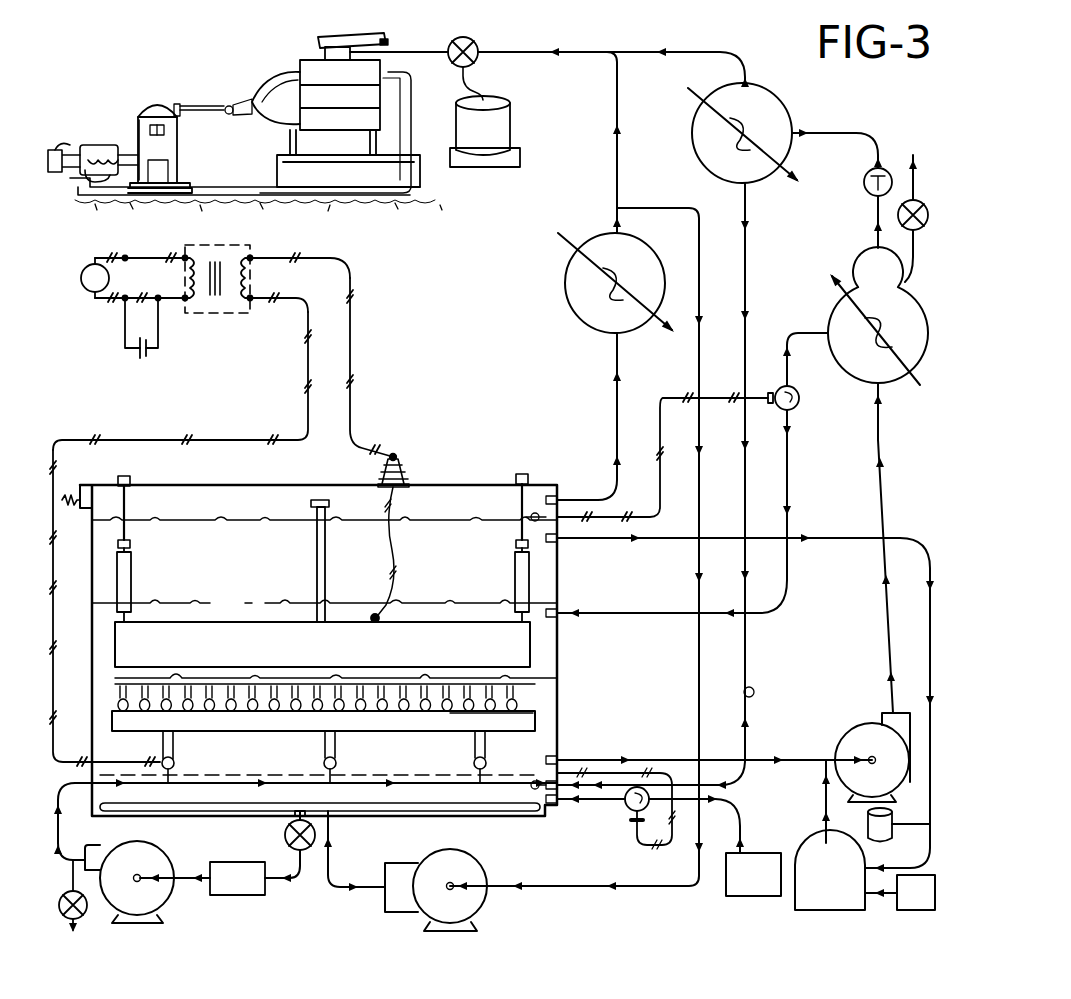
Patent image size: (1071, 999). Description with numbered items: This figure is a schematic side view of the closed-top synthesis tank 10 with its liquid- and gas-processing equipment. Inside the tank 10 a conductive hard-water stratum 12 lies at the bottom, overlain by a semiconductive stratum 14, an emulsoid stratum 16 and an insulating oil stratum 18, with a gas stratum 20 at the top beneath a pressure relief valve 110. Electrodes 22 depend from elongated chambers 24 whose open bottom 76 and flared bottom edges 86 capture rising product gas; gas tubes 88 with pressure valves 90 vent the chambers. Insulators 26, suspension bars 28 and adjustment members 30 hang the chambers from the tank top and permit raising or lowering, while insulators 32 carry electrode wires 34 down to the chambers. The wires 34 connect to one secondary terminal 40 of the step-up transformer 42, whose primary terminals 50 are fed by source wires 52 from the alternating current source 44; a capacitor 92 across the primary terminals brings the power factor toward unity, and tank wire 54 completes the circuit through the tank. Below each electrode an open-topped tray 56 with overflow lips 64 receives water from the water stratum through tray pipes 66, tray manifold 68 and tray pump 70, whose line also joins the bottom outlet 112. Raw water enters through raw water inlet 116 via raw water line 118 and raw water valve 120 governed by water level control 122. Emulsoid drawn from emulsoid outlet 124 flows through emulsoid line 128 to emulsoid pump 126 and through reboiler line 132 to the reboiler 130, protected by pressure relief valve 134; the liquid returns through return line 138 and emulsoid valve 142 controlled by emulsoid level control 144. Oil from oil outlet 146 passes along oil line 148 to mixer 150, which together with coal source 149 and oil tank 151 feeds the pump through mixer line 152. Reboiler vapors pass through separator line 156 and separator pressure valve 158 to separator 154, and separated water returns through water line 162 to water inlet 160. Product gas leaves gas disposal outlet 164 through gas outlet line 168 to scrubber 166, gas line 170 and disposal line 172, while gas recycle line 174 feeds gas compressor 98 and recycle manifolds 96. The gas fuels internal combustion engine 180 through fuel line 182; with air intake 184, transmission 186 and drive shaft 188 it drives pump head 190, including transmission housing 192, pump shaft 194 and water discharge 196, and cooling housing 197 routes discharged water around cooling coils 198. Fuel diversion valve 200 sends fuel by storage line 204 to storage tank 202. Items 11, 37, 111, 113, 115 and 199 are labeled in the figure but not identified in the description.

The tank 10 is at (268, 486).
The drain valve 11 is at (85, 908).
The water stratum 12 is at (96, 800).
The semiconductive stratum 14 is at (92, 756).
The emulsoid stratum 16 is at (96, 648).
The oil stratum 18 is at (94, 590).
The gas stratum 20 is at (108, 520).
The electrodes 22 is at (262, 712).
The elongated chambers 24 is at (214, 636).
The insulators 26 is at (132, 592).
The suspension bars 28 is at (131, 546).
The adjustment members 30 is at (136, 502).
The insulators 32 is at (132, 480).
The electrode wires 34 is at (348, 388).
The insulator 37 is at (516, 476).
The secondary terminals 40 is at (262, 284).
The transformer 42 is at (210, 308).
The source of alternating electrical current 44 is at (93, 292).
The primary terminals 50 is at (182, 282).
The source wires 52 is at (140, 260).
The tank wire 54 is at (306, 420).
The open topped tray 56 is at (382, 756).
The overflow lips 64 is at (250, 730).
The tray pipes 66 is at (162, 760).
The tray manifold 68 is at (216, 780).
The tray pump 70 is at (164, 906).
The open bottom 76 is at (396, 710).
The bottom edges 86 is at (236, 708).
The gas tubes 88 is at (316, 576).
The pressure valves 90 is at (312, 506).
The capacitor 92 is at (140, 360).
The recycle manifolds 96 is at (442, 808).
The recycle pump 98 is at (452, 866).
The pressure relief valve 110 is at (88, 498).
The line 111 is at (302, 862).
The bottom outlet 112 is at (296, 822).
The filter 113 is at (244, 875).
The water supply 115 is at (726, 892).
The raw water inlet 116 is at (552, 804).
The raw water line 118 is at (604, 802).
The raw water valve 120 is at (624, 808).
The water level control 122 is at (550, 762).
The emulsoid outlet 124 is at (562, 756).
The emulsoid pump 126 is at (858, 742).
The emulsoid line 128 is at (760, 760).
The reboiler 130 is at (885, 386).
The reboiler line 132 is at (887, 614).
The pressure relief valve 134 is at (916, 200).
The return line 138 is at (796, 498).
The emulsoid valve 142 is at (798, 404).
The emulsoid level control 144 is at (545, 476).
The oil outlet 146 is at (560, 545).
The oil line 148 is at (640, 544).
The coal source 149 is at (915, 898).
The mixer 150 is at (822, 854).
The oil tank 151 is at (872, 834).
The mixer line 152 is at (826, 804).
The separator 154 is at (768, 106).
The separator line 156 is at (826, 134).
The separator pressure valve 158 is at (863, 188).
The water inlet 160 is at (545, 788).
The water line 162 is at (745, 694).
The gas disposal outlet 164 is at (600, 498).
The scrubber 166 is at (585, 310).
The gas outlet line 168 is at (614, 412).
The gas line 170 is at (617, 178).
The disposal line 172 is at (562, 46).
The gas recycle line 174 is at (698, 288).
The internal combustion engine 180 is at (250, 92).
The fuel line 182 is at (428, 52).
The air intake 184 is at (398, 16).
The transmission 186 is at (276, 122).
The drive shaft 188 is at (206, 108).
The pump head 190 is at (158, 104).
The transmission housing 192 is at (138, 125).
The pump shaft 194 is at (170, 140).
The water discharge 196 is at (128, 150).
The cooling housing 197 is at (62, 146).
The cooling coils 198 is at (90, 195).
The ground 199 is at (318, 197).
The fuel diversion valve 200 is at (478, 62).
The storage tank 202 is at (505, 140).
The storage line 204 is at (485, 88).